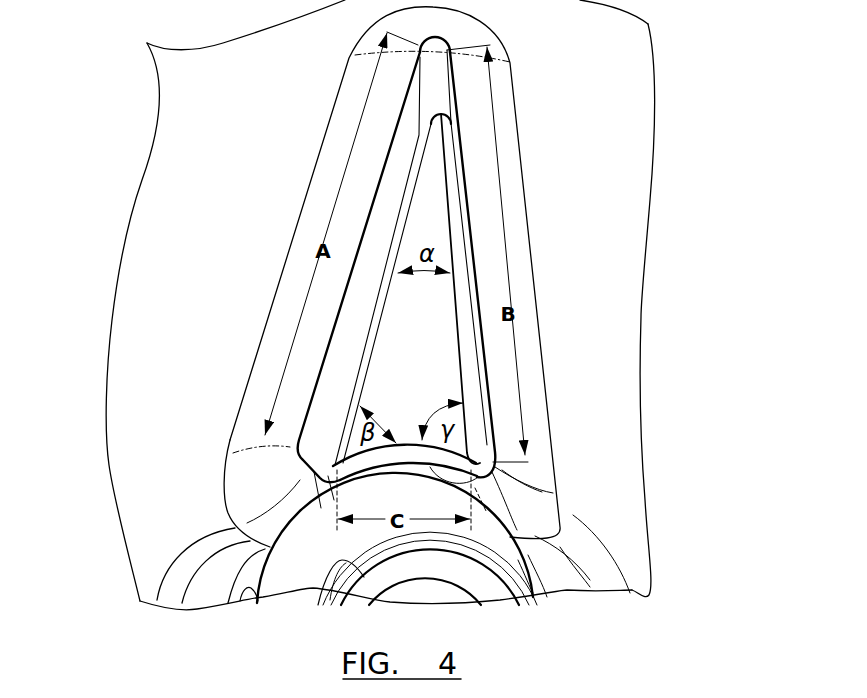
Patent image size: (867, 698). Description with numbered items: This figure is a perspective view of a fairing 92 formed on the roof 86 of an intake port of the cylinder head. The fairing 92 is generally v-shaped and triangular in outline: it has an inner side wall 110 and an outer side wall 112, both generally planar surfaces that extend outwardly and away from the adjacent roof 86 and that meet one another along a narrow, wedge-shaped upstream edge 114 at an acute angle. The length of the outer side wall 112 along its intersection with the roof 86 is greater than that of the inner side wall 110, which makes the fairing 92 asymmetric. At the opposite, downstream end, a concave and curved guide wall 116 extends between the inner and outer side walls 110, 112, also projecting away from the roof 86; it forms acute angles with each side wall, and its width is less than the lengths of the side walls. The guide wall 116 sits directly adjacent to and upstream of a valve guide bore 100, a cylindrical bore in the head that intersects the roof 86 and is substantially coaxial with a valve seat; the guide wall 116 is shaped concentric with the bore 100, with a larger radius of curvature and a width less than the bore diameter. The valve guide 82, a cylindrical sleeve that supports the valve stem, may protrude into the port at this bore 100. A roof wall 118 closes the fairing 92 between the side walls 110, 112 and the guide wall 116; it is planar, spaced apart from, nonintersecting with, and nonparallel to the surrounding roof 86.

The roof 86 is at (217, 181).
The outer side wall 112 is at (355, 287).
The inner side wall 110 is at (465, 275).
The fairing 92 is at (405, 337).
The roof wall 118 is at (441, 369).
The guide wall 116 is at (430, 498).
The valve guide 82 is at (333, 560).
The valve guide bore 100 is at (240, 603).
The upstream edge 114 is at (606, 582).